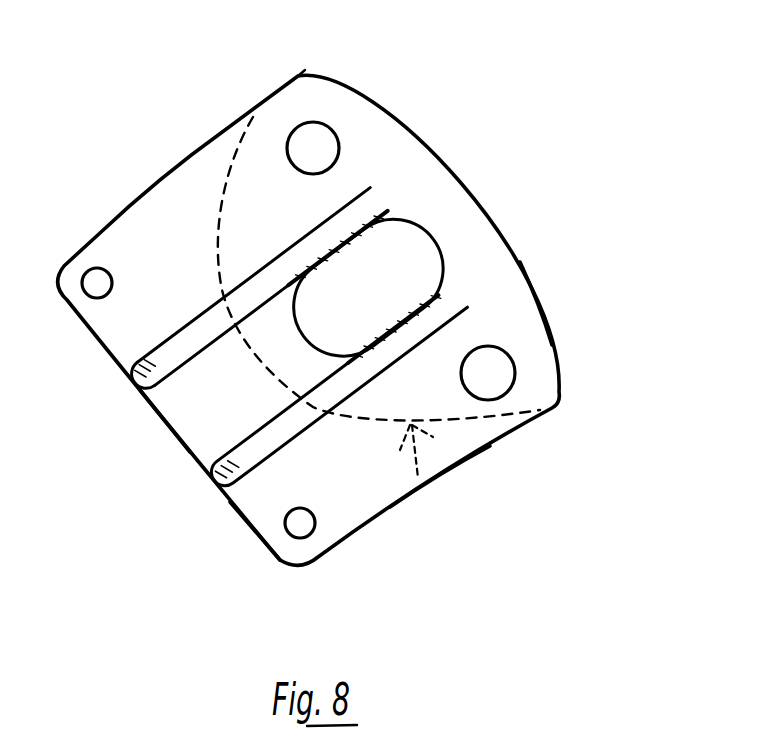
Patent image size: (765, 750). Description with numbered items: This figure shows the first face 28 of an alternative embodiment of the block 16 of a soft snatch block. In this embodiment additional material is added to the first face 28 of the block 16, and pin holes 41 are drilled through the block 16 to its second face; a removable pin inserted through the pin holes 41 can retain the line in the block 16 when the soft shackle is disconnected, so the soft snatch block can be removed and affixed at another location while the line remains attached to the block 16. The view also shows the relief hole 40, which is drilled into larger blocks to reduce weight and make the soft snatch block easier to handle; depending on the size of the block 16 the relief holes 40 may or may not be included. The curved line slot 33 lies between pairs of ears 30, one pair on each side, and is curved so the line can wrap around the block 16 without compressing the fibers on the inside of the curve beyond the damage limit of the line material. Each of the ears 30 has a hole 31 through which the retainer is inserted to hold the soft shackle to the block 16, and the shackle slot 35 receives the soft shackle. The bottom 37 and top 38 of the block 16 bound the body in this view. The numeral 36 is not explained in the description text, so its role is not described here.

The block 16 is at (430, 117).
The first face 28 is at (263, 192).
The ears 30 is at (195, 322).
The holes 31 is at (140, 364).
The line slot 33 is at (423, 488).
The shackle slot 35 is at (158, 446).
The recess 36 is at (393, 298).
The bottom 37 is at (248, 552).
The top 38 is at (547, 180).
The relief hole 40 is at (515, 357).
The pin holes 41 is at (309, 534).